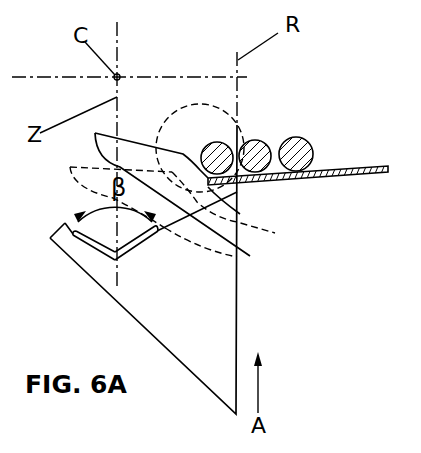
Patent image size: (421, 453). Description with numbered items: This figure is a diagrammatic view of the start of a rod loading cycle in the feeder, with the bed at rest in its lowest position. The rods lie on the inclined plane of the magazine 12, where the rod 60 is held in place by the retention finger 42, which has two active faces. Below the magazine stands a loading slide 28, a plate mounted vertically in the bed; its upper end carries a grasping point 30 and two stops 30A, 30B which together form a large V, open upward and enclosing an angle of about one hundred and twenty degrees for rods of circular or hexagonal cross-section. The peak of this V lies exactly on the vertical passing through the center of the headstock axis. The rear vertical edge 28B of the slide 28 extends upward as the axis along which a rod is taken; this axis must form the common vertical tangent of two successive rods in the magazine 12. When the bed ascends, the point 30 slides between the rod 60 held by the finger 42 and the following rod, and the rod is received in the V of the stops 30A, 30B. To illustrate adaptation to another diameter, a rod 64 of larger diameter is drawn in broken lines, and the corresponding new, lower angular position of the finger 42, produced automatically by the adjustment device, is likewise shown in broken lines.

The magazine 12 is at (350, 187).
The loading slide 28 is at (217, 337).
The rear vertical edge 28B is at (223, 313).
The grasping point 30 is at (212, 190).
The first stop 30A is at (142, 255).
The second stop 30B is at (90, 249).
The retention finger 42 is at (240, 214).
The rod 60 is at (223, 139).
The rod of larger diameter 64 is at (210, 127).